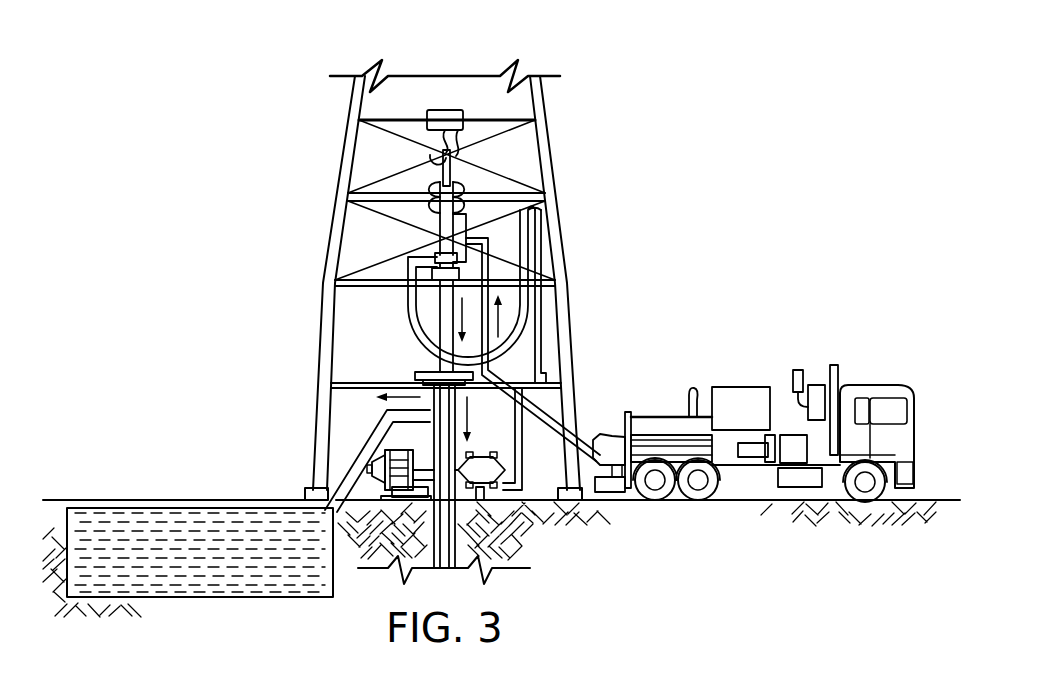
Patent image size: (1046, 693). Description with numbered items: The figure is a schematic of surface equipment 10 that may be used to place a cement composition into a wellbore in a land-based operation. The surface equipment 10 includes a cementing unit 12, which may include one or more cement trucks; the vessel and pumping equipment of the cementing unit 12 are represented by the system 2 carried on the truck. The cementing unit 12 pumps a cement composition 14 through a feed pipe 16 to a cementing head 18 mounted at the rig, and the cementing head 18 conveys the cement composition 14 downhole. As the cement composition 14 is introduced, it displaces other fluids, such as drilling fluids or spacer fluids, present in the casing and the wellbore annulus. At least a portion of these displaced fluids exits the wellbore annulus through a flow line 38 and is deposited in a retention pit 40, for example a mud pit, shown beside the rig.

The surface equipment 10 is at (131, 113).
The cementing head 18 is at (480, 186).
The cement composition 14 is at (457, 313).
The feed pipe 16 is at (530, 403).
The flow line 38 is at (367, 465).
The retention pit 40 is at (215, 565).
The system 2 is at (741, 336).
The cementing unit 12 is at (884, 381).